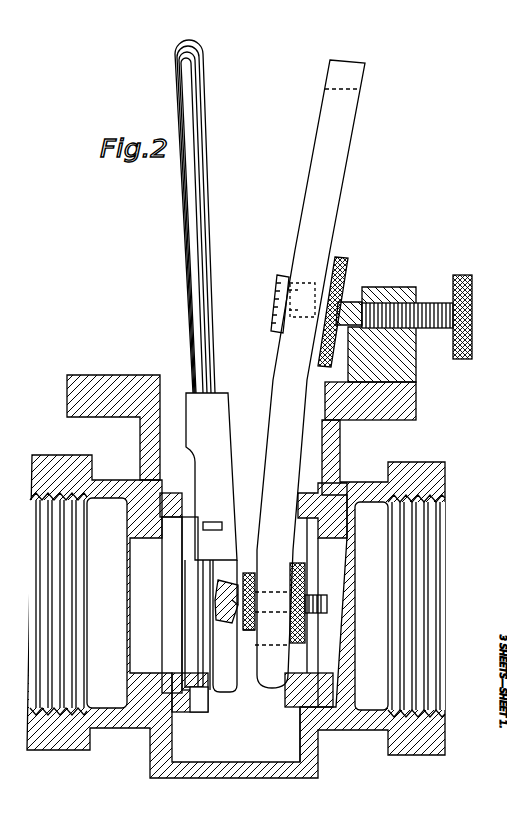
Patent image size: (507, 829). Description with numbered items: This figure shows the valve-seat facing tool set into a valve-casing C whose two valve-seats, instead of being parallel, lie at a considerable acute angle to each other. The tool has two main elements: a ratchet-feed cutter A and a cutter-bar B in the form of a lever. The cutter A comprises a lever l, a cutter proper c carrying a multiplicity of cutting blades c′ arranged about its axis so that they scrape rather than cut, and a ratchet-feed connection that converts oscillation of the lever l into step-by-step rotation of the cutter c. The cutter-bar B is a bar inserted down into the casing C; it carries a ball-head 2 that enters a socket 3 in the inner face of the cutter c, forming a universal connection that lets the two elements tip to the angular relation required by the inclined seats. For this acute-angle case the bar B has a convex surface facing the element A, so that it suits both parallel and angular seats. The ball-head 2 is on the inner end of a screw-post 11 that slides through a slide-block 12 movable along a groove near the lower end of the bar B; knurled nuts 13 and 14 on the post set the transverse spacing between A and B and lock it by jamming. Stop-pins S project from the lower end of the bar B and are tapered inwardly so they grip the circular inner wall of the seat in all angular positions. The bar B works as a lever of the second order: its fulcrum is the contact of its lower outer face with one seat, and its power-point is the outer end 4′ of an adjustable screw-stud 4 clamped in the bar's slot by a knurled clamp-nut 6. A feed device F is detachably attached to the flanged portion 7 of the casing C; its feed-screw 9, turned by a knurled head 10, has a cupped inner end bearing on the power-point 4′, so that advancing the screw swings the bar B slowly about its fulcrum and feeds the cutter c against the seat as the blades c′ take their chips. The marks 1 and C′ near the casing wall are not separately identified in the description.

The ratchet-feed cutter A is at (183, 212).
The cutter-bar lever B is at (338, 214).
The valve-casing C is at (113, 415).
The lever l is at (190, 327).
The packing nut 1 is at (170, 493).
The cutting blades c′ is at (162, 562).
The socket 3 is at (190, 612).
The cutter proper c is at (224, 624).
The ball-head 2 is at (233, 624).
The slide-block 12 is at (262, 592).
The knurled nut 13 is at (255, 622).
The knurled nut 14 is at (305, 635).
The screw-post 11 is at (316, 595).
The stop-pins S is at (322, 683).
The lower nut C′ is at (205, 703).
The knurled clamp-nut 6 is at (345, 265).
The adjustable screw-stud 4 is at (296, 302).
The power-point 4′ is at (352, 303).
The feed device F is at (382, 326).
The feed-screw 9 is at (412, 305).
The knurled head 10 is at (472, 299).
The flanged portion 7 is at (417, 407).